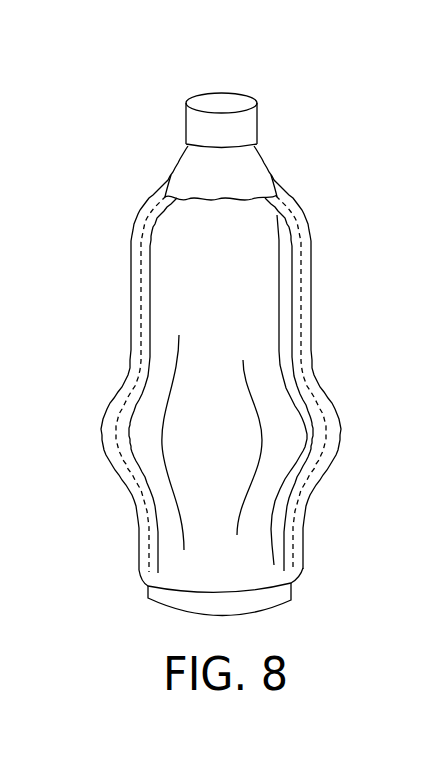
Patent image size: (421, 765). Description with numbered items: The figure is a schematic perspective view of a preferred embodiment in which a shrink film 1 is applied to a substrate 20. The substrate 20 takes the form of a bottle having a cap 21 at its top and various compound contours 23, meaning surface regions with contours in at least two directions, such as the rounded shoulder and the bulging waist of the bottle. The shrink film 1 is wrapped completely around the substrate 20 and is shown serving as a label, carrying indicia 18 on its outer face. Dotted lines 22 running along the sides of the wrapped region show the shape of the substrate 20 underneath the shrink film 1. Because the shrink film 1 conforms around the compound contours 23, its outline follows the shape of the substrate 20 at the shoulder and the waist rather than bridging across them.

The shrink film 1 is at (303, 538).
The indicia 18 is at (229, 282).
The substrate 20 is at (241, 162).
The cap 21 is at (198, 122).
The dotted lines 22 is at (133, 275).
The compound contours 23 is at (142, 190).